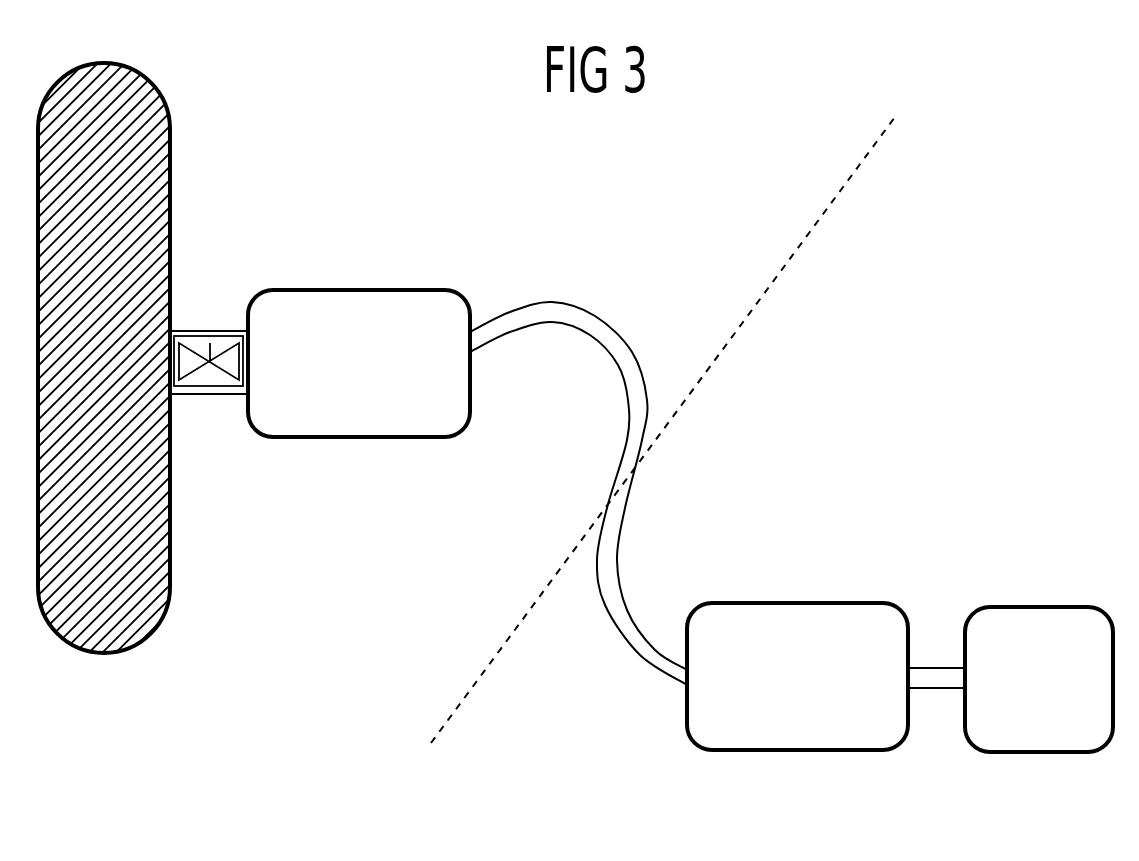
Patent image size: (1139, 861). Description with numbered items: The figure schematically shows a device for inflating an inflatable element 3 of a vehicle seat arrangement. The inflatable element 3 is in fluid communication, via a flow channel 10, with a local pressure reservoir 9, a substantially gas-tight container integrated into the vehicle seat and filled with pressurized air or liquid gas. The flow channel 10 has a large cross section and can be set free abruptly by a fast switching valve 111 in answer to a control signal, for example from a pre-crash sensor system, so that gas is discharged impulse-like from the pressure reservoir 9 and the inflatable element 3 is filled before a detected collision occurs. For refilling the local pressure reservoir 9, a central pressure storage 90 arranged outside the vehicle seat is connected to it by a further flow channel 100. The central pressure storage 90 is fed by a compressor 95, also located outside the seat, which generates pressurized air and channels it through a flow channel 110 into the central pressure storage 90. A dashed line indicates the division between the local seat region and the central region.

The inflatable element 3 is at (138, 103).
The local pressure reservoir 9 is at (443, 420).
The flow channel 10 is at (222, 332).
The fast switching valve 111 is at (233, 367).
The further flow channel 100 is at (622, 352).
The central pressure storage 90 is at (847, 630).
The compressor 95 is at (1062, 627).
The flow channel 110 is at (942, 687).